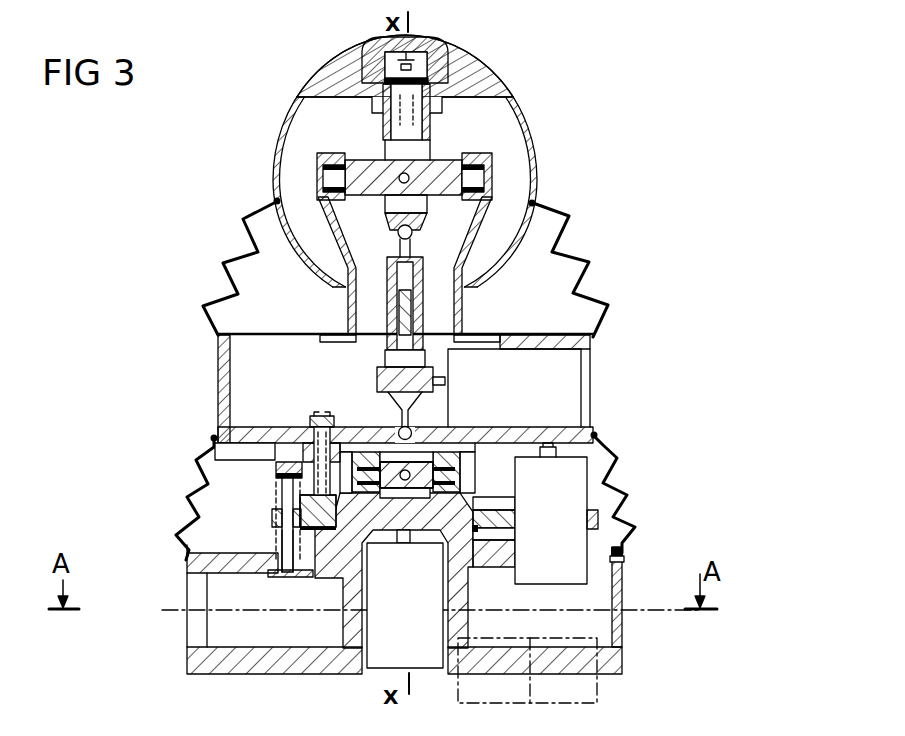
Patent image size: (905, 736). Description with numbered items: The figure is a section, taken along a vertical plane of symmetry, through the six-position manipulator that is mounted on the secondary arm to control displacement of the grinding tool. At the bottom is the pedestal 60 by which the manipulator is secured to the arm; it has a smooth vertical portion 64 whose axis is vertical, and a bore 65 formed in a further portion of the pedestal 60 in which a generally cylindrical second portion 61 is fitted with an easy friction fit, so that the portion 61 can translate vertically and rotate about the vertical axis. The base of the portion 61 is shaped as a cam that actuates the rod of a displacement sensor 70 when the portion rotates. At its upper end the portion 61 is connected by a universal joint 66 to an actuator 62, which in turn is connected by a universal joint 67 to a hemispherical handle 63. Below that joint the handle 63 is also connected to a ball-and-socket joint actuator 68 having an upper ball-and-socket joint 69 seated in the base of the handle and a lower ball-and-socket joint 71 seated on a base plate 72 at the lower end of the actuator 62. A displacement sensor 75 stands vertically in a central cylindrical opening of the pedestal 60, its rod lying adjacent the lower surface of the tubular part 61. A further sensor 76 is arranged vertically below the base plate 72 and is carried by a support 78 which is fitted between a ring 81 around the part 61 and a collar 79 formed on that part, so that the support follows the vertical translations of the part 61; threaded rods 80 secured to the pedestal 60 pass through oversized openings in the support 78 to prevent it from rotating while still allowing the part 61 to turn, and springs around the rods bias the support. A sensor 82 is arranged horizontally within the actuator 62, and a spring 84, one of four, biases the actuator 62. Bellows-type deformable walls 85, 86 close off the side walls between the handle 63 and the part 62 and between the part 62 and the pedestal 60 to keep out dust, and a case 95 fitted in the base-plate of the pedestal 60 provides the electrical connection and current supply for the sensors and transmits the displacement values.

The pedestal 60 is at (188, 549).
The second portion 61 is at (315, 533).
The actuator 62 is at (496, 214).
The hemispherical handle 63 is at (527, 116).
The smooth vertical portion 64 is at (348, 625).
The bore 65 is at (336, 543).
The universal joint 66 is at (275, 474).
The universal joint 67 is at (318, 176).
The ball-and-socket joint actuator 68 is at (384, 325).
The upper ball-and-socket joint 69 is at (397, 235).
The displacement sensor 70 is at (220, 598).
The lower ball-and-socket joint 71 is at (315, 398).
The base plate 72 is at (462, 468).
The displacement sensor 75 is at (612, 612).
The sensor 76 is at (567, 552).
The support 78 is at (272, 517).
The collar 79 is at (474, 525).
The threaded rods 80 is at (290, 542).
The ring 81 is at (612, 563).
The sensor 82 is at (543, 378).
The spring 84 is at (305, 452).
The deformable wall 85 is at (570, 251).
The deformable wall 86 is at (447, 38).
The case 95 is at (583, 695).